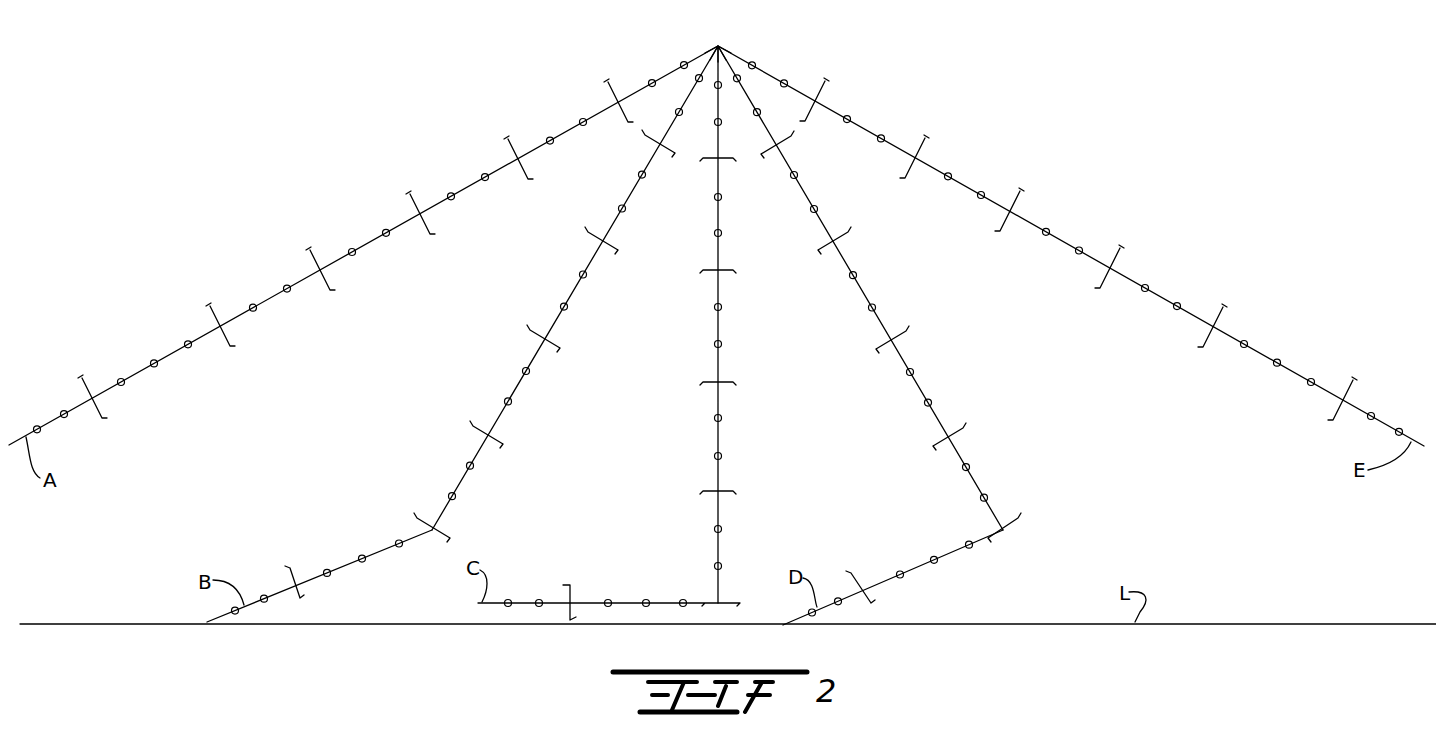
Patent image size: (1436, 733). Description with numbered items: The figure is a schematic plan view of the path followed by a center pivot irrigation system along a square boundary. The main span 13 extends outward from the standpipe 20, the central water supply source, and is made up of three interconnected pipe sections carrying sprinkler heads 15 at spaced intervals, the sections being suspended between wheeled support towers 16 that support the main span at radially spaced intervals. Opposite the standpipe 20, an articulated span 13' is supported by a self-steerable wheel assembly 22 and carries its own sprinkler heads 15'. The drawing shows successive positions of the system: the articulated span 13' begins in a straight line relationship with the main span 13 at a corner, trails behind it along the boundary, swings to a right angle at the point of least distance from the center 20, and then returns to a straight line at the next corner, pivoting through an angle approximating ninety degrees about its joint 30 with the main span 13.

The standpipe 20 is at (720, 46).
The main span 13 is at (716, 324).
The articulated span 13' is at (679, 476).
The sprinkler heads 15 is at (718, 316).
The base connector ring 15' is at (783, 468).
The wheeled support towers 16 is at (323, 280).
The self-steerable wheel assembly 22 is at (100, 412).
The strut joint 30 is at (1006, 533).